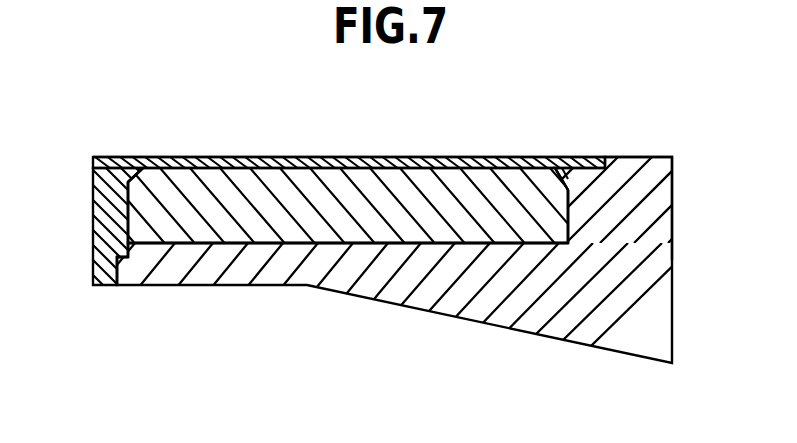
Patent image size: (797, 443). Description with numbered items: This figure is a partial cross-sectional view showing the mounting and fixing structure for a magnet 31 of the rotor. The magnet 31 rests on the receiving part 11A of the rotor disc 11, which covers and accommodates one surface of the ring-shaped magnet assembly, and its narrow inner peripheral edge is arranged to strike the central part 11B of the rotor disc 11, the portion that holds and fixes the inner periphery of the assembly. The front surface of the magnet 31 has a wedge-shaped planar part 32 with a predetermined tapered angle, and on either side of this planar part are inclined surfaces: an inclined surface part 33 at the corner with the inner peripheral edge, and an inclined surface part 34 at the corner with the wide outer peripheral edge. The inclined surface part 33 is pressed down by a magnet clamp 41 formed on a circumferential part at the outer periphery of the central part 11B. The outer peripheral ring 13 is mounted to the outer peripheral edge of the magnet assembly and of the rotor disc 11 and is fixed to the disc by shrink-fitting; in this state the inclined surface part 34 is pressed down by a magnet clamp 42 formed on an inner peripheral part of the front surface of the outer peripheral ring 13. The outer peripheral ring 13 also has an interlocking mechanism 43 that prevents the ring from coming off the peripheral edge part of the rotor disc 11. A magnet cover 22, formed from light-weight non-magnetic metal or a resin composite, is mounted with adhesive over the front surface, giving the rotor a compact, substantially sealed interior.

The rotor disc 11 is at (521, 298).
The receiving part 11A is at (231, 240).
The central part 11B is at (636, 172).
The outer peripheral ring 13 is at (108, 210).
The interlocking mechanism 43 is at (108, 285).
The magnet cover 22 is at (260, 165).
The wedge-shaped planar part 32 is at (322, 165).
The magnet 31 is at (444, 201).
The inclined surface part 34 is at (124, 168).
The magnet clamp 42 is at (143, 167).
The magnet clamp 41 is at (558, 170).
The inclined surface part 33 is at (571, 171).